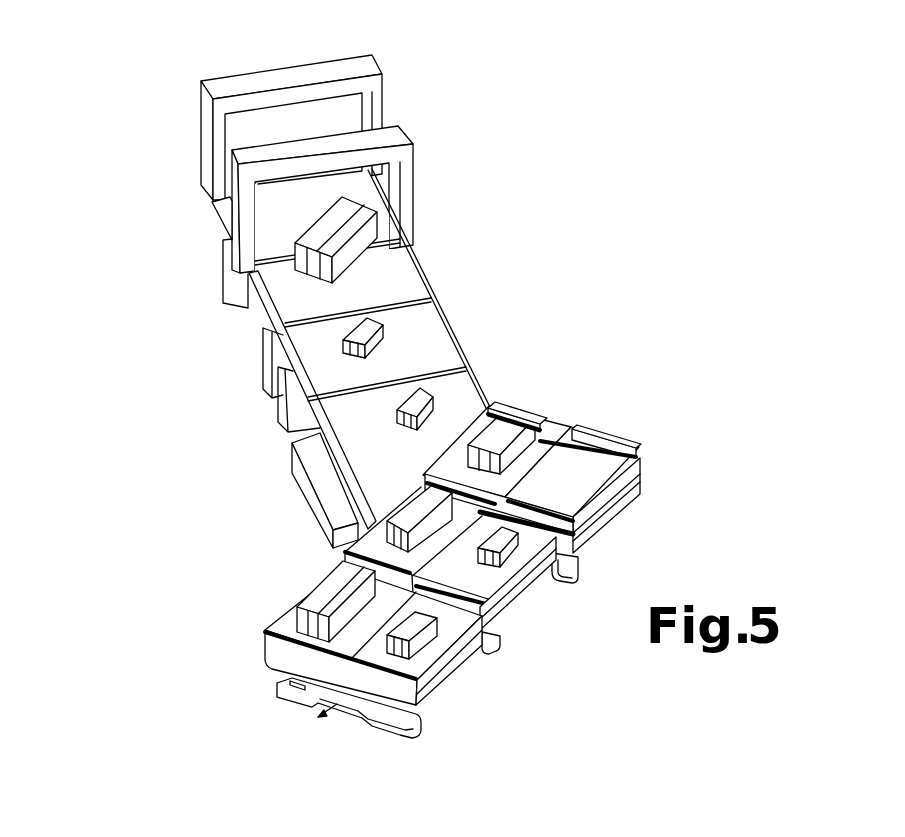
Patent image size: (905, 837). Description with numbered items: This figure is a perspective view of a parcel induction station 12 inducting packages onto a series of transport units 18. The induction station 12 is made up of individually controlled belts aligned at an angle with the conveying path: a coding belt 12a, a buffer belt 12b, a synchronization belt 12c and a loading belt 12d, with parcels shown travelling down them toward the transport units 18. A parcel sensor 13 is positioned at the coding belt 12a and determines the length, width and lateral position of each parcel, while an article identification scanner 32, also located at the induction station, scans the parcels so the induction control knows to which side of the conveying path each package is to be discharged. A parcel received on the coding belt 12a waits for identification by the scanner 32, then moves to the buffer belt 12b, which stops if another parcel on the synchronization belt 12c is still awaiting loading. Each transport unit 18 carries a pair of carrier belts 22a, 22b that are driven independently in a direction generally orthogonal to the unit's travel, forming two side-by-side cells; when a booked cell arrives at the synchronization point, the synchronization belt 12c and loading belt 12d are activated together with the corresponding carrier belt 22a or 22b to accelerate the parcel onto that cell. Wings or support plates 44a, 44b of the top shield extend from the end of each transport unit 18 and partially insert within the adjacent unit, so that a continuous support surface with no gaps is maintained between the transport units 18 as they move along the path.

The parcel induction station 12 is at (330, 331).
The coding belt 12a is at (200, 157).
The buffer belt 12b is at (385, 277).
The synchronization belt 12c is at (428, 343).
The loading belt 12d is at (457, 407).
The parcel sensor 13 is at (403, 125).
The article identification system or scanner 32 is at (241, 72).
The transport unit 18 is at (492, 544).
The carrier belt 22a is at (538, 443).
The carrier belt 22b is at (563, 487).
The support plate 44a is at (538, 420).
The stop wall 44b is at (613, 442).